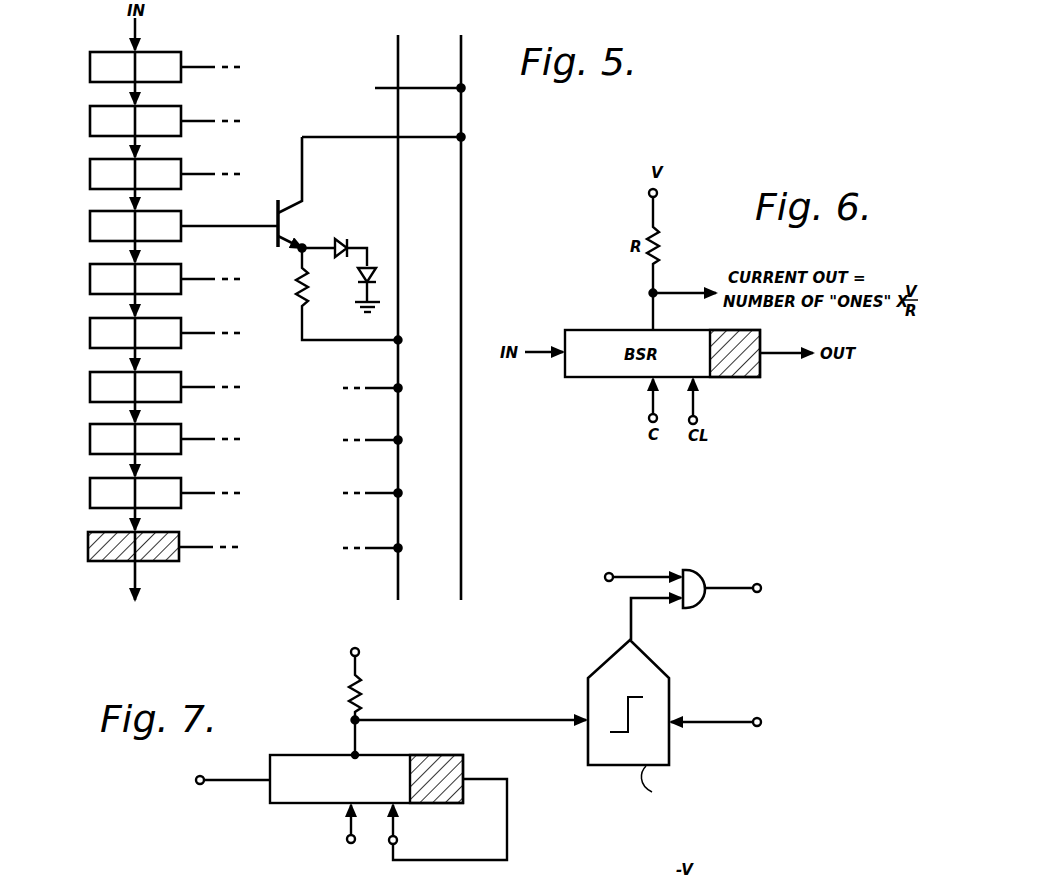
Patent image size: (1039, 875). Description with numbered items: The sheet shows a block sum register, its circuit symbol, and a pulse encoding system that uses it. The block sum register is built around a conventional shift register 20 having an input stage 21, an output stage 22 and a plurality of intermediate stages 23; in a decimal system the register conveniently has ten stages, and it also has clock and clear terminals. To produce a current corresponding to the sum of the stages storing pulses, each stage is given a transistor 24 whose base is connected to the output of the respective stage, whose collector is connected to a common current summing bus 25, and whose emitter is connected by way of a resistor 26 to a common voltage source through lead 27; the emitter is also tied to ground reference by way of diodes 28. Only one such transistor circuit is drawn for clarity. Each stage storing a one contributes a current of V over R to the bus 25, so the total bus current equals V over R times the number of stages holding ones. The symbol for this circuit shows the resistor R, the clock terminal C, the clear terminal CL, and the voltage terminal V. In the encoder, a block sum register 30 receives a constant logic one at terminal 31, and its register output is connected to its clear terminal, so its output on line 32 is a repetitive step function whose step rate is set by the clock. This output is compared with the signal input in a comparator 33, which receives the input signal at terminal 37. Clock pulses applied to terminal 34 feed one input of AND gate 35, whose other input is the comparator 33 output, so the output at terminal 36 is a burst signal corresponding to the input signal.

In FIG. 5, the shift register 20 is at (62, 343).
In FIG. 5, the input stage 21 is at (90, 68).
In FIG. 5, the output stage 22 is at (86, 552).
In FIG. 5, the intermediate stages 23 is at (90, 113).
In FIG. 5, the transistor 24 is at (270, 215).
In FIG. 5, the common current summing bus 25 is at (462, 181).
In FIG. 5, the resistor 26 is at (298, 292).
In FIG. 5, the lead 27 is at (398, 222).
In FIG. 5, the diodes 28 is at (372, 268).
In FIG. 7, the block sum register 30 is at (293, 806).
In FIG. 7, the terminal 31 is at (198, 786).
In FIG. 7, the line 32 is at (470, 720).
In FIG. 7, the comparator 33 is at (652, 657).
In FIG. 7, the terminal 34 is at (605, 582).
In FIG. 7, the AND gate 35 is at (697, 571).
In FIG. 7, the terminal 36 is at (762, 585).
In FIG. 7, the terminal 37 is at (760, 717).